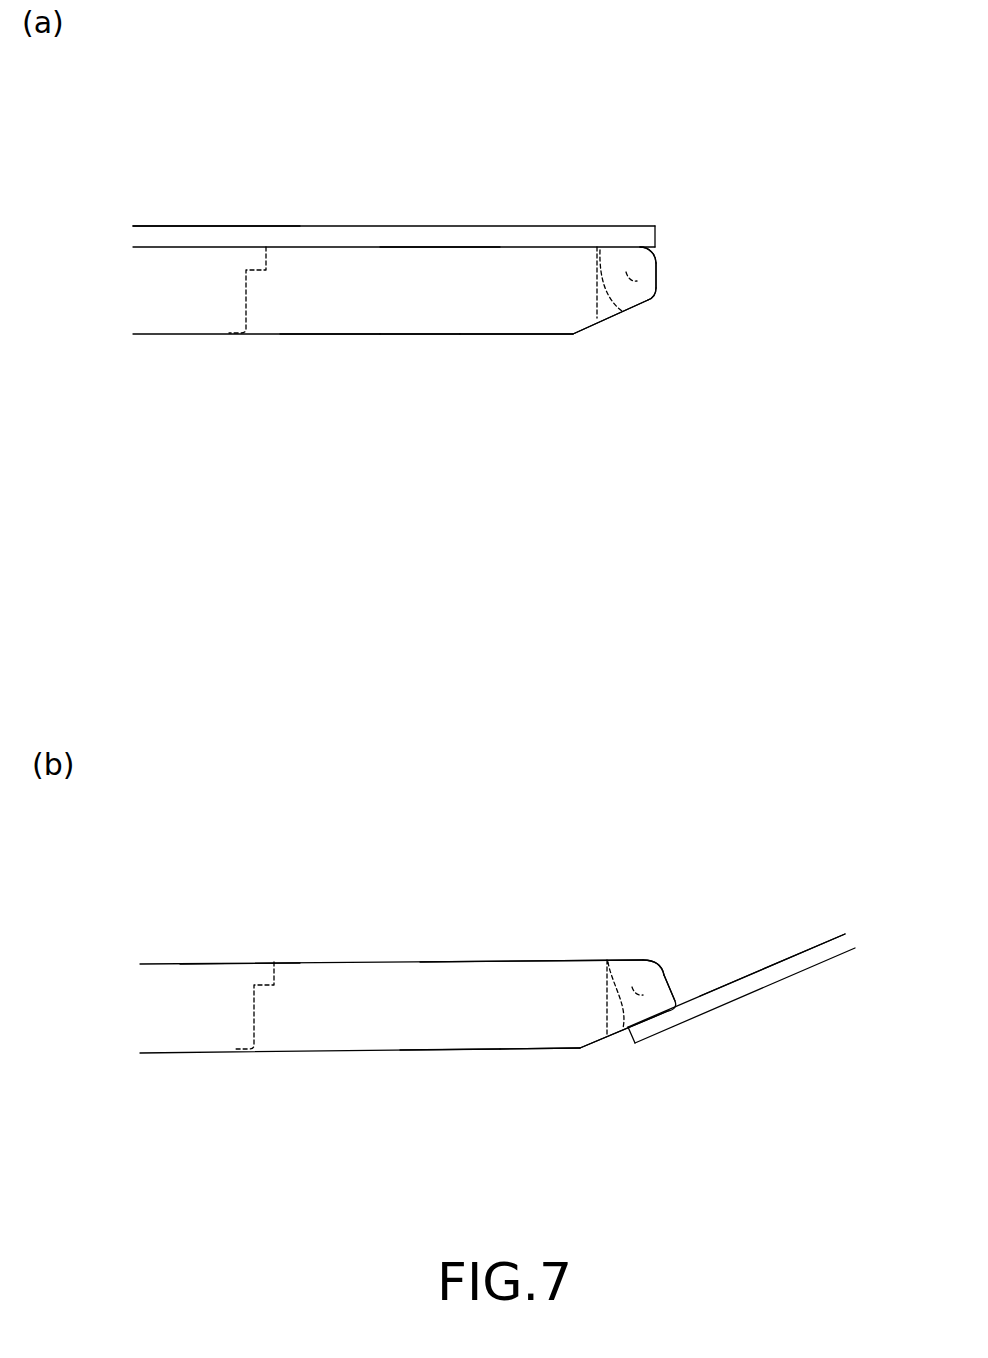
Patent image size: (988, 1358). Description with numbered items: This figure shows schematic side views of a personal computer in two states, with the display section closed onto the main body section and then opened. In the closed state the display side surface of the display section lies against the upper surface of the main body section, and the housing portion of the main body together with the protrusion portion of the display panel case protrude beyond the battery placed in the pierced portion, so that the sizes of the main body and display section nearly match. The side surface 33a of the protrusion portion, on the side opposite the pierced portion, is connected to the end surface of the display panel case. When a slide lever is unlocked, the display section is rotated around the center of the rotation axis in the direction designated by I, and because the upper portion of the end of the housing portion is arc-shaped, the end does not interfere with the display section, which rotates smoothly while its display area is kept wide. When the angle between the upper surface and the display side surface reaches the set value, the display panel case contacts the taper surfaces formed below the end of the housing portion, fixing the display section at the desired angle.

The side surface 33a is at (657, 257).
The rotation direction I is at (510, 203).